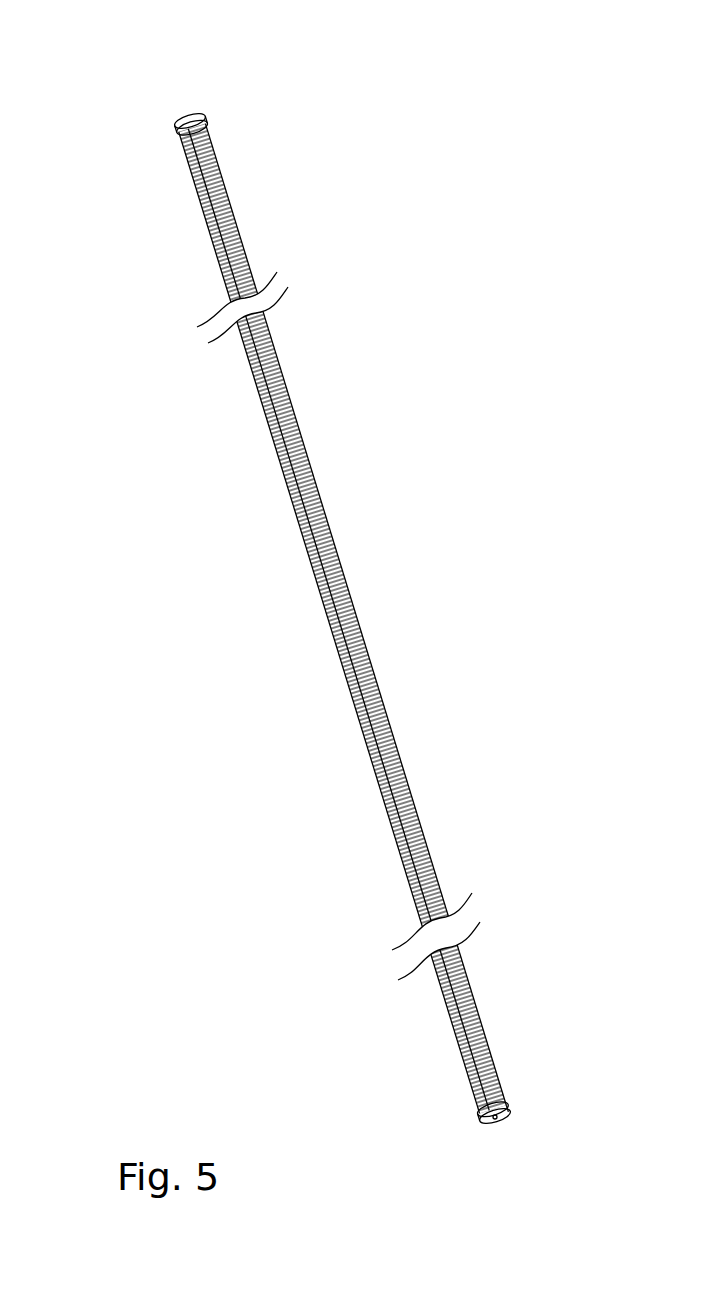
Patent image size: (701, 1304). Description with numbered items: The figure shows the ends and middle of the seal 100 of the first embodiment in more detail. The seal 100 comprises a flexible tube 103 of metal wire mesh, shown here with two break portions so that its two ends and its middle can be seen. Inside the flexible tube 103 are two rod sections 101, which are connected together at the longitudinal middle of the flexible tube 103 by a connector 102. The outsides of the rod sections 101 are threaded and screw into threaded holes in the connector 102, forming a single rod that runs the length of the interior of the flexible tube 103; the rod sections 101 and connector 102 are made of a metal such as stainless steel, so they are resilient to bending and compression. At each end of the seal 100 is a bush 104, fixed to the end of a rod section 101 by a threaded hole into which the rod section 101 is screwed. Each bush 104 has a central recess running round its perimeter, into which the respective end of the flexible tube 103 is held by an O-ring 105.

The seal 100 is at (482, 321).
The rod section 101 is at (235, 214).
The connector 102 is at (322, 493).
The flexible tube 103 is at (215, 145).
The bush 104 is at (193, 113).
The O-ring 105 is at (175, 130).